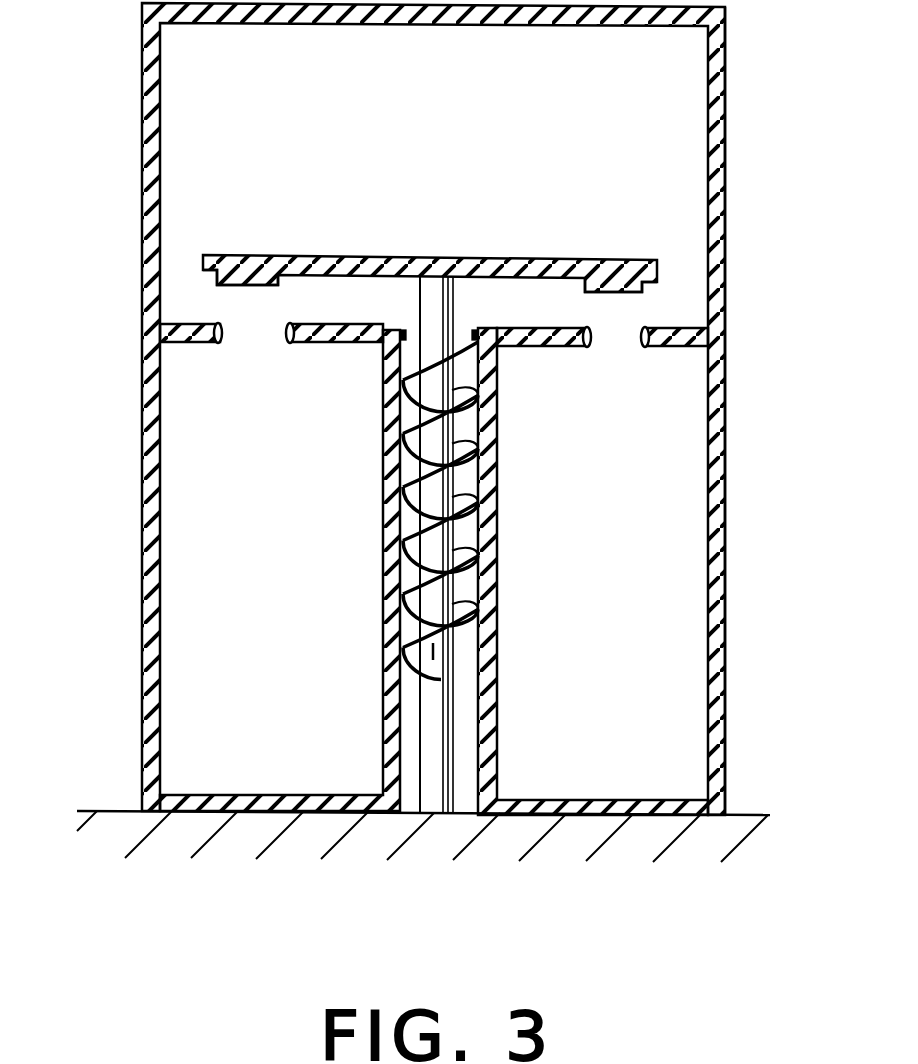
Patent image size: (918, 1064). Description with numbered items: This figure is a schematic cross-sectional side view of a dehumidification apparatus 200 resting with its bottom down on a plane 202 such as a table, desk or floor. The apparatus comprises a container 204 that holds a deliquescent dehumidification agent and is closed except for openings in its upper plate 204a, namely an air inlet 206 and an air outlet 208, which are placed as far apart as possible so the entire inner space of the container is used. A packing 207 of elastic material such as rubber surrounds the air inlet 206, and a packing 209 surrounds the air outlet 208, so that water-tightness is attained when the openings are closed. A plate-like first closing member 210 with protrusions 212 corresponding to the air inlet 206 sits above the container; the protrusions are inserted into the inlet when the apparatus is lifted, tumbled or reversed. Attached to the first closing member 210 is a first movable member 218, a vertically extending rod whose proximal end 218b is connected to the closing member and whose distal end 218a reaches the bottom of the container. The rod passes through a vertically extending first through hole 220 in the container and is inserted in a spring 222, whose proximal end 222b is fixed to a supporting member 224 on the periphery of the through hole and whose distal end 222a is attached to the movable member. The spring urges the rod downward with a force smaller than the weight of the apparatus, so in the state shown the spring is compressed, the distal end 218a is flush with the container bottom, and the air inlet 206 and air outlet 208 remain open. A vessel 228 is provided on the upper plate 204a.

The dehumidification apparatus 200 is at (441, 463).
The plane 202 is at (745, 814).
The container 204 is at (718, 590).
The upper plate 204a is at (313, 343).
The air inlet 206 is at (242, 332).
The packing 207 is at (218, 343).
The air outlet 208 is at (620, 333).
The packing 209 is at (590, 348).
The first closing member 210 is at (405, 256).
The protrusion 212 is at (235, 292).
The first movable member 218 is at (440, 644).
The distal end 218a is at (437, 815).
The proximal end 218b is at (510, 274).
The first through hole 220 is at (470, 735).
The spring 222 is at (468, 500).
The distal end of spring 222a is at (440, 679).
The proximal end of spring 222b is at (390, 397).
The supporting member 224 is at (406, 340).
The vessel 228 is at (716, 118).